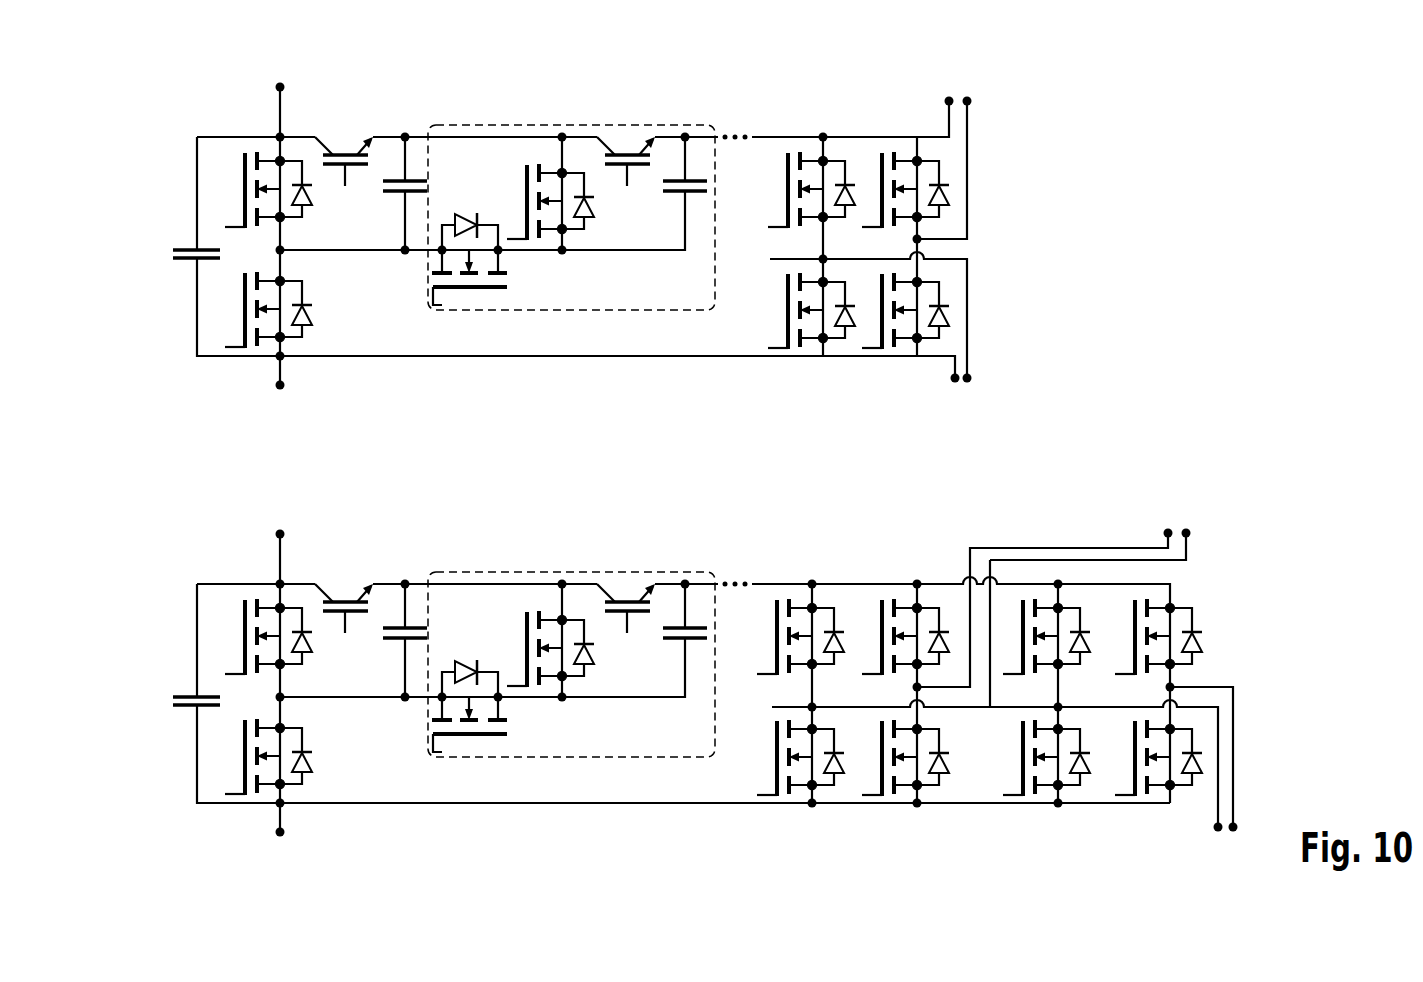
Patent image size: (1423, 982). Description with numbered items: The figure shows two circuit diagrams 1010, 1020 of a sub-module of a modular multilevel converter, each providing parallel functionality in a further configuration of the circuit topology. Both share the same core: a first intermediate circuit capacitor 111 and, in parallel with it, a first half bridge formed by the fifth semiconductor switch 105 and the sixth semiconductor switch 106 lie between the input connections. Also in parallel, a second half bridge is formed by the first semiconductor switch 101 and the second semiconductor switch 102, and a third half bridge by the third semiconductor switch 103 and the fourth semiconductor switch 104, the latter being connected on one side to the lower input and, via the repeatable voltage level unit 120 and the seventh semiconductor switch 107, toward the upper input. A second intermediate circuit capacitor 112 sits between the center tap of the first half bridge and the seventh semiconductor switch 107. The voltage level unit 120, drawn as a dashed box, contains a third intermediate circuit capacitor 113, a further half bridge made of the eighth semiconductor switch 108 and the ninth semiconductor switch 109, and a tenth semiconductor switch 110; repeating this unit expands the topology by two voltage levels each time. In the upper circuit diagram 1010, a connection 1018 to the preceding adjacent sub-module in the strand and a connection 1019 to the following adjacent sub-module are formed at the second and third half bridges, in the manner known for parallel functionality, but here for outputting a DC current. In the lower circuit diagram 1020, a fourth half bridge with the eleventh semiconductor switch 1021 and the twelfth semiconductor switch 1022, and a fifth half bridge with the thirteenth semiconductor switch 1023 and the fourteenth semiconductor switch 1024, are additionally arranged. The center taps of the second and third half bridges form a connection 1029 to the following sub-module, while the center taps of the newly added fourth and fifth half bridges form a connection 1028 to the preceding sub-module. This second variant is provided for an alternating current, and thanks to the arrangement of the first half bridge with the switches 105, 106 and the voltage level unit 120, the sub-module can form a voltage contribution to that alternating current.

The first semiconductor switch 101 is at (782, 187).
The second semiconductor switch 102 is at (784, 322).
The third semiconductor switch 103 is at (940, 167).
The fourth semiconductor switch 104 is at (940, 288).
The fifth semiconductor switch 105 is at (240, 190).
The sixth semiconductor switch 106 is at (305, 327).
The seventh semiconductor switch 107 is at (328, 166).
The eighth semiconductor switch 108 is at (472, 290).
The ninth semiconductor switch 109 is at (518, 197).
The tenth semiconductor switch 110 is at (617, 170).
The first intermediate circuit capacitor 111 is at (195, 262).
The second intermediate circuit capacitor 112 is at (395, 193).
The third intermediate circuit capacitor 113 is at (678, 193).
The repeatable voltage level unit 120 is at (630, 122).
The circuit diagram with DC output as first variant 1010 is at (155, 237).
The connection to the preceding sub-module 1018 is at (955, 378).
The connection to the following sub-module 1019 is at (967, 100).
The circuit diagram with AC output as second variant 1020 is at (155, 684).
The eleventh semiconductor switch 1021 is at (1018, 637).
The twelfth semiconductor switch 1022 is at (1015, 773).
The thirteenth semiconductor switch 1023 is at (1200, 619).
The fourteenth semiconductor switch 1024 is at (1127, 773).
The connection to the preceding sub-module 1028 is at (1218, 827).
The connection to the following sub-module 1029 is at (1186, 533).